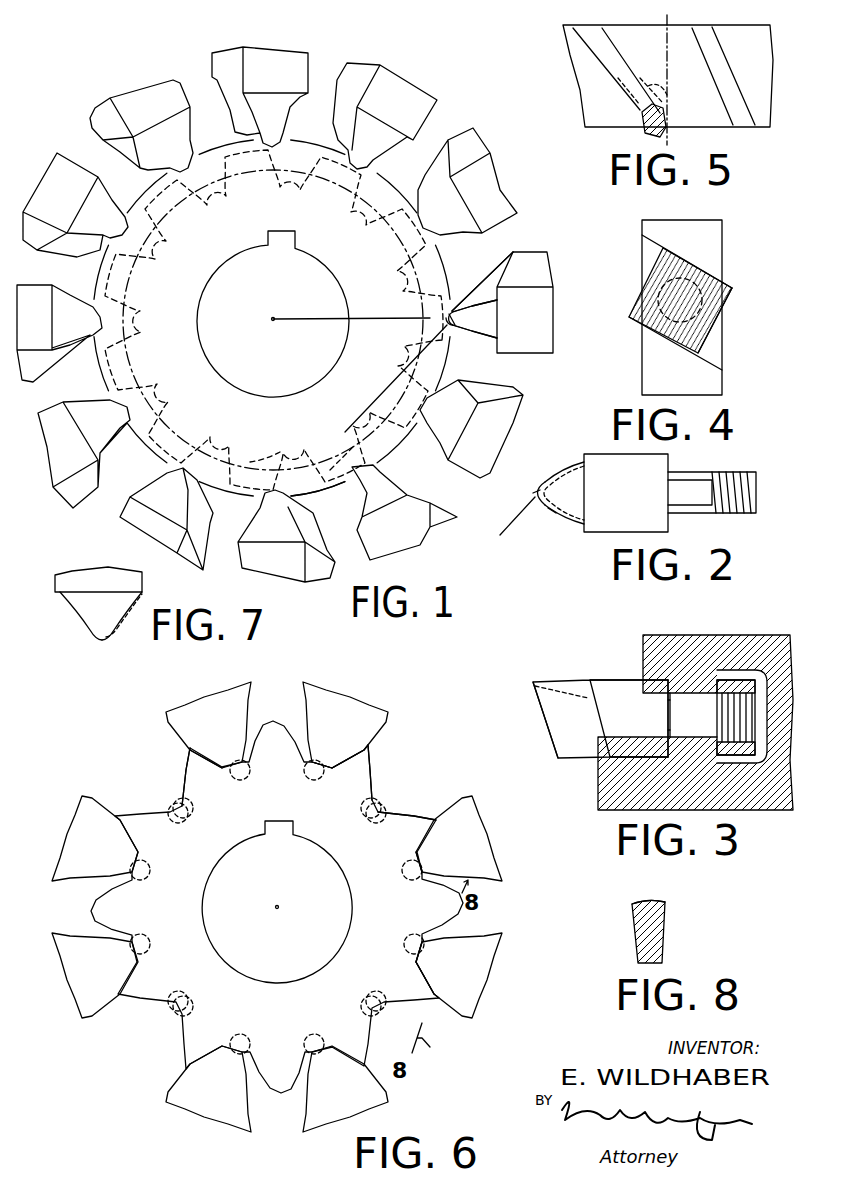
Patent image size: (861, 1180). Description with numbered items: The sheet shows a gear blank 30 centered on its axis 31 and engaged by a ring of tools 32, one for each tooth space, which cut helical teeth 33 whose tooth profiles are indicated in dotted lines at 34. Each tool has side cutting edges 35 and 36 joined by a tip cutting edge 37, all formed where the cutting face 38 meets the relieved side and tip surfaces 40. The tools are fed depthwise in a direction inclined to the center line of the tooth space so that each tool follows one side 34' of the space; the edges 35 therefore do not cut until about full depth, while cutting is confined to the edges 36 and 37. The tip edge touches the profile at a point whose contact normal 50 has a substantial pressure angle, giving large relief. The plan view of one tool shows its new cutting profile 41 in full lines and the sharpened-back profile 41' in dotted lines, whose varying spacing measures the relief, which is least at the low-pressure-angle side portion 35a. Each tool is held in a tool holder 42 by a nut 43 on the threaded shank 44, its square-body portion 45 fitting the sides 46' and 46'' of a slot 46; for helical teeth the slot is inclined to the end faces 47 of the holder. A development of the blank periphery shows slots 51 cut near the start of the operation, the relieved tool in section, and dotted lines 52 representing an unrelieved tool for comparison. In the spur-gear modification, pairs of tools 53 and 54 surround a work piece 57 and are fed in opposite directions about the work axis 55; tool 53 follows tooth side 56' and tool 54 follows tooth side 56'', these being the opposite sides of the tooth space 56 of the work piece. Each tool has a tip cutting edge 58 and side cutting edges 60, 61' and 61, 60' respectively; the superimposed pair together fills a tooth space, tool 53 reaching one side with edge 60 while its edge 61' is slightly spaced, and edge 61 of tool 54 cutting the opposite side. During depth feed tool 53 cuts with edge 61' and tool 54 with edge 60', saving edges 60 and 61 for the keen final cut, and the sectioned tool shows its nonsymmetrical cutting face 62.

In FIG. 1, the gear blank 30 is at (198, 272).
In FIG. 5, the gear blank 30 is at (705, 33).
In FIG. 1, the axis of the gear blank 31 is at (273, 319).
In FIG. 1, the tool 32 is at (545, 296).
In FIG. 5, the tool 32 is at (666, 127).
In FIG. 4, the tool 32 is at (714, 304).
In FIG. 2, the tool 32 is at (655, 468).
In FIG. 3, the tool 32 is at (578, 718).
In FIG. 1, the helical teeth 33 is at (308, 494).
In FIG. 1, the tooth profiles 34 is at (274, 320).
In FIG. 1, the side of the tooth spaces 34' is at (302, 447).
In FIG. 5, the side of the tooth spaces 34' is at (640, 70).
In FIG. 1, the side cutting edge 35 is at (452, 328).
In FIG. 2, the side cutting edge 35 is at (548, 511).
In FIG. 2, the side portion of low pressure angle 35a is at (562, 516).
In FIG. 1, the side cutting edge 36 is at (460, 312).
In FIG. 2, the side cutting edge 36 is at (578, 467).
In FIG. 1, the tip cutting edge 37 is at (447, 312).
In FIG. 2, the tip cutting edge 37 is at (535, 497).
In FIG. 1, the cutting face 38 is at (470, 322).
In FIG. 3, the cutting face 38 is at (568, 682).
In FIG. 1, the side and tip surfaces 40 is at (470, 285).
In FIG. 3, the side and tip surfaces 40 is at (562, 745).
In FIG. 2, the cutting profile 41 is at (525, 488).
In FIG. 2, the sharpened cutting profile 41' is at (554, 481).
In FIG. 4, the tool holder 42 is at (706, 250).
In FIG. 3, the tool holder 42 is at (670, 650).
In FIG. 3, the nut 43 is at (730, 680).
In FIG. 2, the shank 44 is at (720, 505).
In FIG. 3, the shank 44 is at (695, 705).
In FIG. 2, the square-body portion 45 is at (648, 515).
In FIG. 3, the square-body portion 45 is at (612, 692).
In FIG. 4, the slot 46 is at (734, 322).
In FIG. 3, the slot 46 is at (652, 718).
In FIG. 3, the side of the slot 46' is at (629, 694).
In FIG. 3, the side of the slot 46'' is at (639, 744).
In FIG. 4, the end faces of the tool holder 47 is at (706, 221).
In FIG. 1, the contact normal 50 is at (395, 383).
In FIG. 2, the contact normal 50 is at (506, 524).
In FIG. 5, the slots 51 is at (715, 85).
In FIG. 5, the section through an unrelieved tool 52 is at (671, 86).
In FIG. 7, the tool 53 is at (78, 596).
In FIG. 6, the tool 53 is at (172, 710).
In FIG. 6, the tool 54 is at (345, 705).
In FIG. 8, the tool 54 is at (658, 925).
In FIG. 6, the work axis 55 is at (277, 907).
In FIG. 6, the chip space 56 is at (410, 805).
In FIG. 6, the tooth side 56' is at (160, 777).
In FIG. 6, the tooth side 56'' is at (385, 772).
In FIG. 6, the work piece 57 is at (202, 862).
In FIG. 6, the tip cutting edge 58 is at (402, 868).
In FIG. 7, the side cutting edge 60 is at (78, 616).
In FIG. 6, the side cutting edge 60 is at (320, 808).
In FIG. 6, the side cutting edge 60' is at (287, 895).
In FIG. 7, the side cutting edge 61 is at (122, 629).
In FIG. 6, the side cutting edge 61 is at (392, 887).
In FIG. 7, the side cutting edge 61' is at (143, 608).
In FIG. 6, the side cutting edge 61' is at (470, 857).
In FIG. 8, the cutting face 62 is at (650, 903).